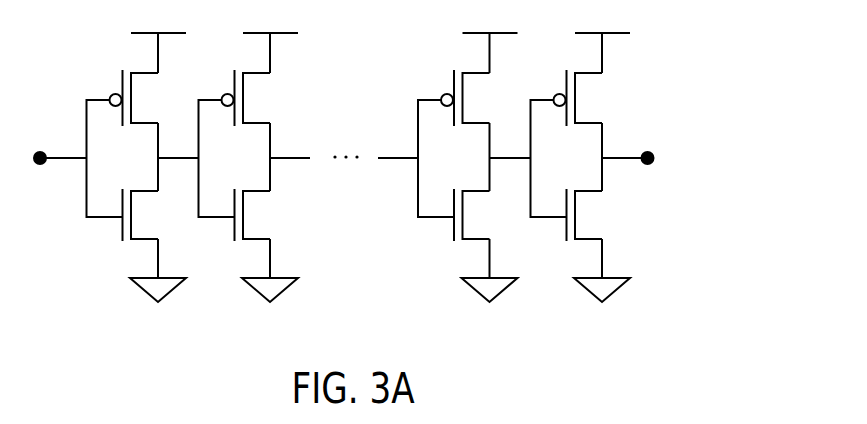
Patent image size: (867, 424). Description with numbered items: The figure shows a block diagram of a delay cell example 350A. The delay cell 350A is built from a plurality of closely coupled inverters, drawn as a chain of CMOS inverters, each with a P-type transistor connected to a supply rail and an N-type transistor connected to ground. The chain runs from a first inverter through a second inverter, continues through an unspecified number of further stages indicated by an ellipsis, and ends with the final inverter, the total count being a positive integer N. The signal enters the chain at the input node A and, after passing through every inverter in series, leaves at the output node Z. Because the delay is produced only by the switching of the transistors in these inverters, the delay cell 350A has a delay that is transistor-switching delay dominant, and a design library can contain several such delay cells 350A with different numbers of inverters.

The delay cell 350A is at (698, 40).
The input node A is at (57, 144).
The output node Z is at (642, 142).